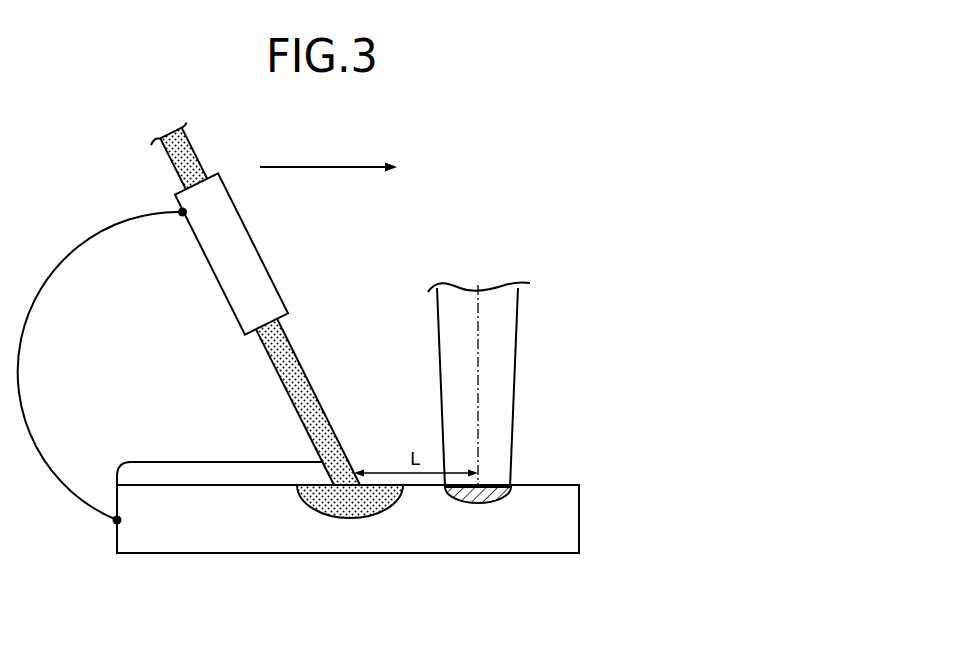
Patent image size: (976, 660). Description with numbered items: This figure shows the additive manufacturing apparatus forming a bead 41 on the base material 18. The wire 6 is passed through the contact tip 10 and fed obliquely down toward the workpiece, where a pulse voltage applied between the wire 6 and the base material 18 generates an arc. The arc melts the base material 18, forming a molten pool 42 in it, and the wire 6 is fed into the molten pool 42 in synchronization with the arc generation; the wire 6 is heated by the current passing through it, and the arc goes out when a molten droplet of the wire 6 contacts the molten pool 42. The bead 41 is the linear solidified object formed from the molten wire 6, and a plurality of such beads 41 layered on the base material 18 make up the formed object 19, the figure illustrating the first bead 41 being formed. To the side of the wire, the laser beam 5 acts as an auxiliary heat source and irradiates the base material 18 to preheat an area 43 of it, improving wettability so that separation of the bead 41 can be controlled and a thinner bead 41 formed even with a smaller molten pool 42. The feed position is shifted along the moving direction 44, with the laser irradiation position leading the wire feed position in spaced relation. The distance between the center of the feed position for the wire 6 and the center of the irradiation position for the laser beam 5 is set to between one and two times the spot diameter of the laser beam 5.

The laser beam 5 is at (517, 358).
The wire 6 is at (302, 386).
The contact tip 10 is at (178, 195).
The base material 18 is at (567, 522).
The formed object 19 is at (125, 448).
The bead 41 is at (197, 470).
The molten pool 42 is at (356, 518).
The preheated area 43 is at (500, 500).
The moving direction 44 is at (327, 165).